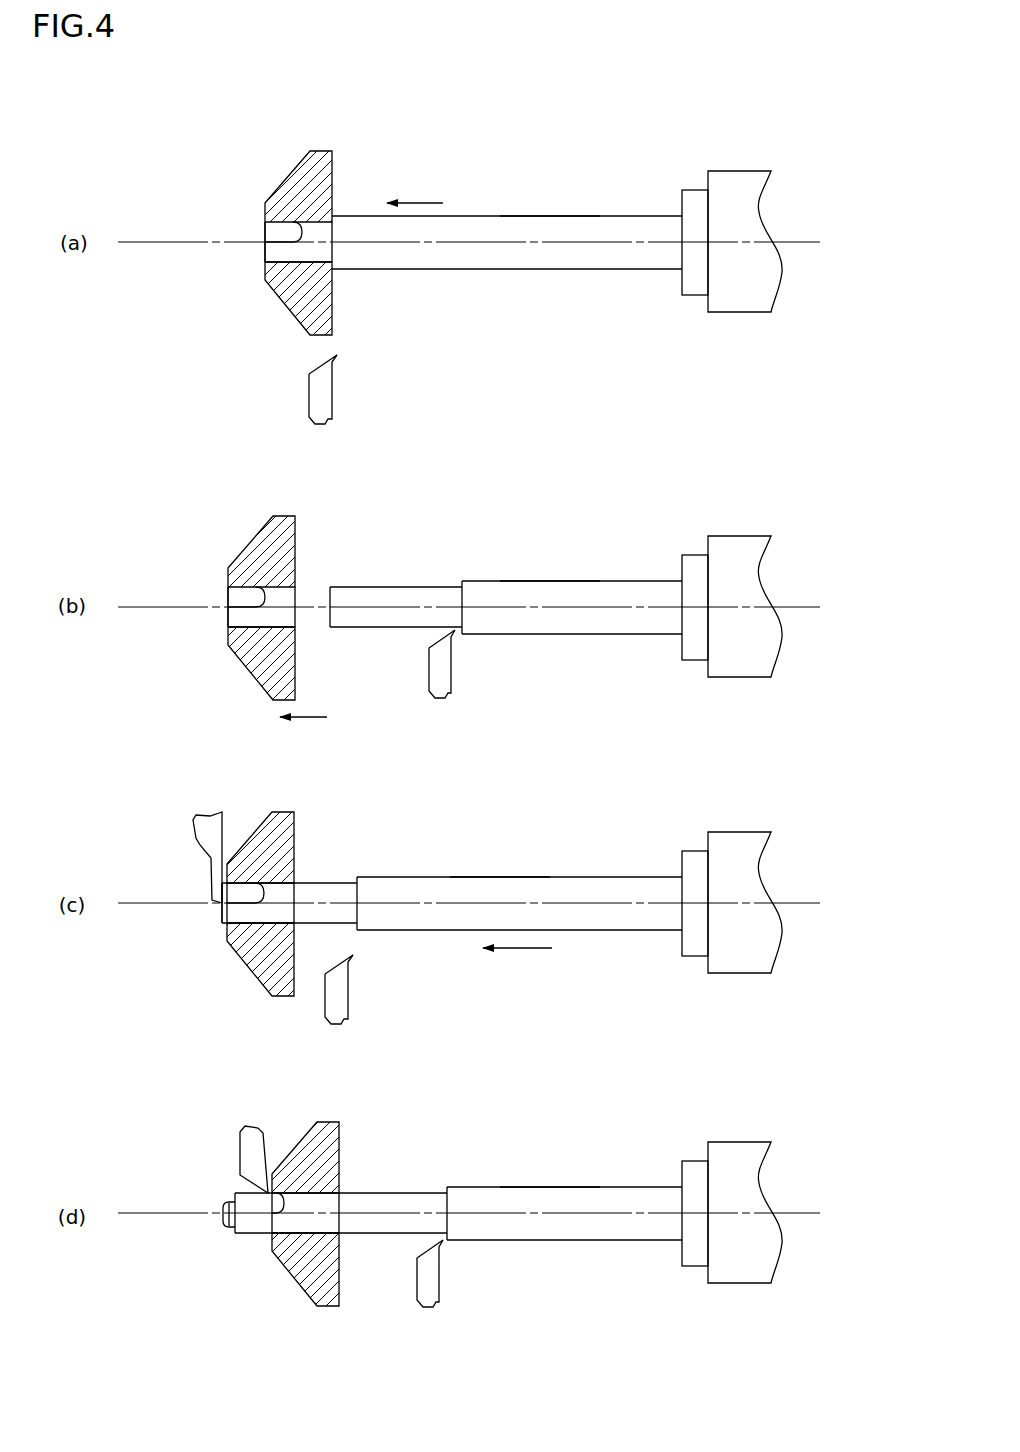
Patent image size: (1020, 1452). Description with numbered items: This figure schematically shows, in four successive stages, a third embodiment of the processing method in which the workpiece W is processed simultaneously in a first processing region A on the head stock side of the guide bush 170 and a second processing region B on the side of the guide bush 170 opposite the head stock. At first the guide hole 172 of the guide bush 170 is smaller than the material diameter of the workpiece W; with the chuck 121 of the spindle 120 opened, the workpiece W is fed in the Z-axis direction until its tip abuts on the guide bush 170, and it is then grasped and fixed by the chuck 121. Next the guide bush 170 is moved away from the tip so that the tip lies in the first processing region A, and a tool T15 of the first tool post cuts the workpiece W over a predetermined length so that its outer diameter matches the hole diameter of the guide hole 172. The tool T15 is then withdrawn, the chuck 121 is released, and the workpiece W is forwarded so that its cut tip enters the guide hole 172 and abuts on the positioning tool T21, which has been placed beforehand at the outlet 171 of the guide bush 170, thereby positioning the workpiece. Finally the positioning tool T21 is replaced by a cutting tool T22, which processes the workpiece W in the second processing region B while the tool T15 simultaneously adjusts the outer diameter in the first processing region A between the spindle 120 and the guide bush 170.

The guide bush 170 is at (322, 150).
The outlet 171 is at (265, 270).
The guide hole 172 is at (265, 242).
The spindle 120 is at (708, 170).
The chuck 121 is at (680, 188).
The workpiece W is at (476, 214).
The first processing region A is at (547, 190).
The second processing region B is at (250, 218).
The tool T15 is at (337, 406).
The positioning tool T21 is at (223, 811).
The cutting tool T22 is at (260, 1127).